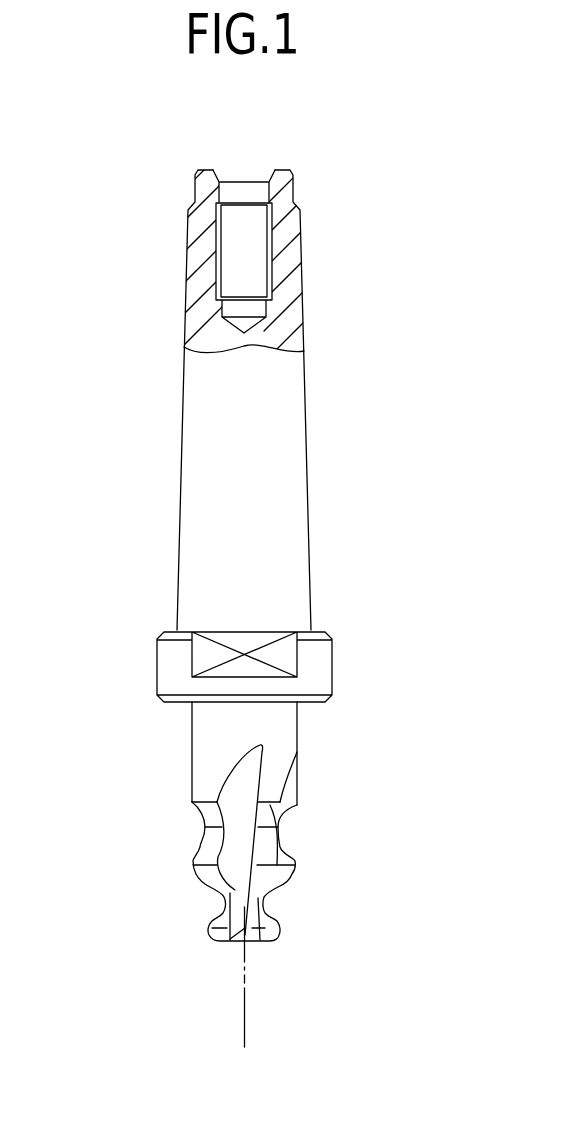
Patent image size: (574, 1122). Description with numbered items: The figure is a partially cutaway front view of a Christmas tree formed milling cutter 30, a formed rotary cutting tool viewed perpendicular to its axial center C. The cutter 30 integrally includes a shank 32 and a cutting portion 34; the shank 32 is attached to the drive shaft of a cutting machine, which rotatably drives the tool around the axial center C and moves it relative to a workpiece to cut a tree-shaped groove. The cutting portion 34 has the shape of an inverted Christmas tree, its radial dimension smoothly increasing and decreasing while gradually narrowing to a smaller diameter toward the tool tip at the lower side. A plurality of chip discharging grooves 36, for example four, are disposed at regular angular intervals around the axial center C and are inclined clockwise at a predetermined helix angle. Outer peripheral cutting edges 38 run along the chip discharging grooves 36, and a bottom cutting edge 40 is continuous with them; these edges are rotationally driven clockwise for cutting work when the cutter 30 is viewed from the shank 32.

The Christmas tree formed milling cutter 30 is at (365, 240).
The shank 32 is at (293, 465).
The cutting portion 34 is at (193, 981).
The chip discharging grooves 36 is at (240, 834).
The outer peripheral cutting edges 38 is at (230, 889).
The bottom cutting edge 40 is at (250, 942).
The axial center C is at (245, 991).